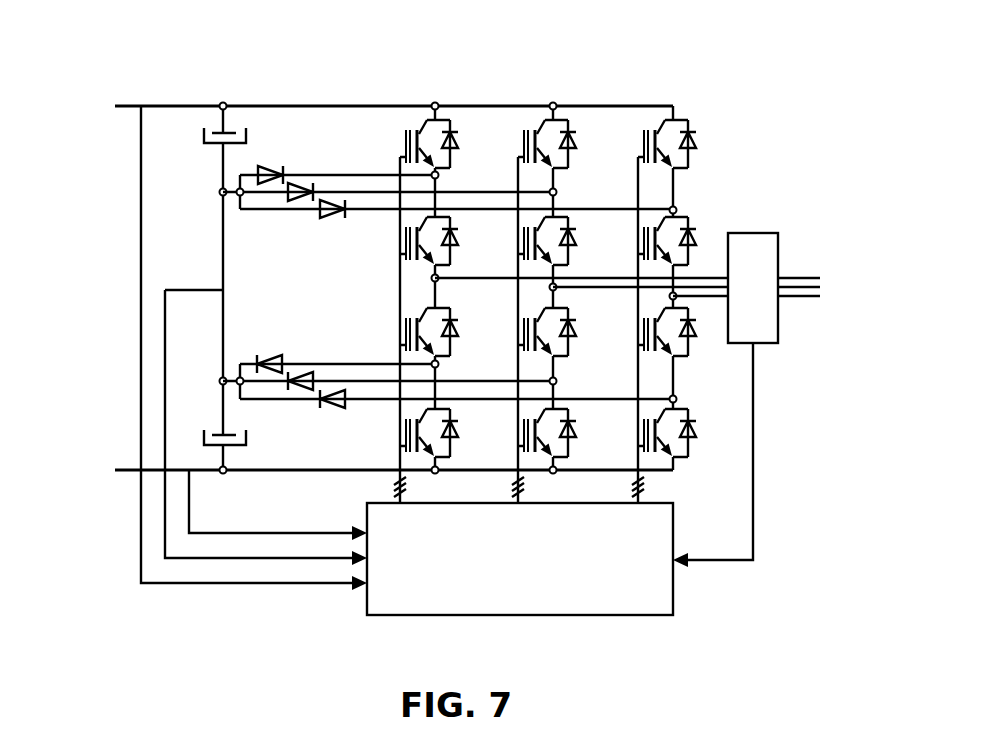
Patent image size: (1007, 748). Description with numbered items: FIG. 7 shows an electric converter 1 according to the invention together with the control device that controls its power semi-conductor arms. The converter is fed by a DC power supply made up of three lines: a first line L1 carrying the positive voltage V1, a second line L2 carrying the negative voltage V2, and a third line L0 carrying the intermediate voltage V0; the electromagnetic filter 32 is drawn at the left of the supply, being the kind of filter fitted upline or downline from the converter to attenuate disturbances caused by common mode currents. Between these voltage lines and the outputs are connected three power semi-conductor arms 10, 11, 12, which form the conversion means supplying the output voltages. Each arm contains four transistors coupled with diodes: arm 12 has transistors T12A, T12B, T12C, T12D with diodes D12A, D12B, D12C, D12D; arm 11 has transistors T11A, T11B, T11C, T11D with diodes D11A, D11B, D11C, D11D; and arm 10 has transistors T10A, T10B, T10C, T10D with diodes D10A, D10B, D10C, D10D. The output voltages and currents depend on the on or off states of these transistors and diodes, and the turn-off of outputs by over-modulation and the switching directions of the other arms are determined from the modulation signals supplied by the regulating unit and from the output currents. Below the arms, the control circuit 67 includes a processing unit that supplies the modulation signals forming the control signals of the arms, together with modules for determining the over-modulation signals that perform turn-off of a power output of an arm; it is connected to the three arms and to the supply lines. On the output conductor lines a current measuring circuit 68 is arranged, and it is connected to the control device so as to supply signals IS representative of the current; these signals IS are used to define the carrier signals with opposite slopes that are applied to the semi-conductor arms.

The three-level inverter 1 is at (791, 90).
The power semi-conductor arm 10 is at (681, 74).
The power semi-conductor arm 11 is at (563, 74).
The power semi-conductor arm 12 is at (441, 74).
The electromagnetic filter 32 is at (233, 347).
The control circuit 67 is at (673, 592).
The current measuring circuit 68 is at (778, 345).
The first positive voltage line L1 is at (162, 106).
The second negative voltage line L2 is at (123, 470).
The third intermediate voltage line L0 is at (223, 222).
The intermediate voltage V0 is at (224, 266).
The positive voltage V1 is at (312, 102).
The negative voltage V2 is at (306, 472).
The signals representative of current IS is at (755, 468).
The transistor T12A is at (400, 150).
The transistor T12B is at (400, 245).
The transistor T12C is at (402, 336).
The transistor T12D is at (402, 446).
The transistor T11A is at (518, 152).
The transistor T11B is at (518, 252).
The transistor T11C is at (518, 347).
The transistor T11D is at (518, 448).
The transistor T10A is at (638, 152).
The transistor T10B is at (638, 252).
The transistor T10C is at (639, 347).
The transistor T10D is at (639, 447).
The diode D12A is at (480, 140).
The diode D12B is at (480, 237).
The diode D12C is at (480, 328).
The diode D12D is at (480, 429).
The diode D11A is at (598, 140).
The diode D11B is at (598, 237).
The diode D11C is at (598, 328).
The diode D11D is at (598, 429).
The diode D10A is at (720, 143).
The diode D10B is at (696, 247).
The diode D10C is at (696, 338).
The diode D10D is at (713, 428).